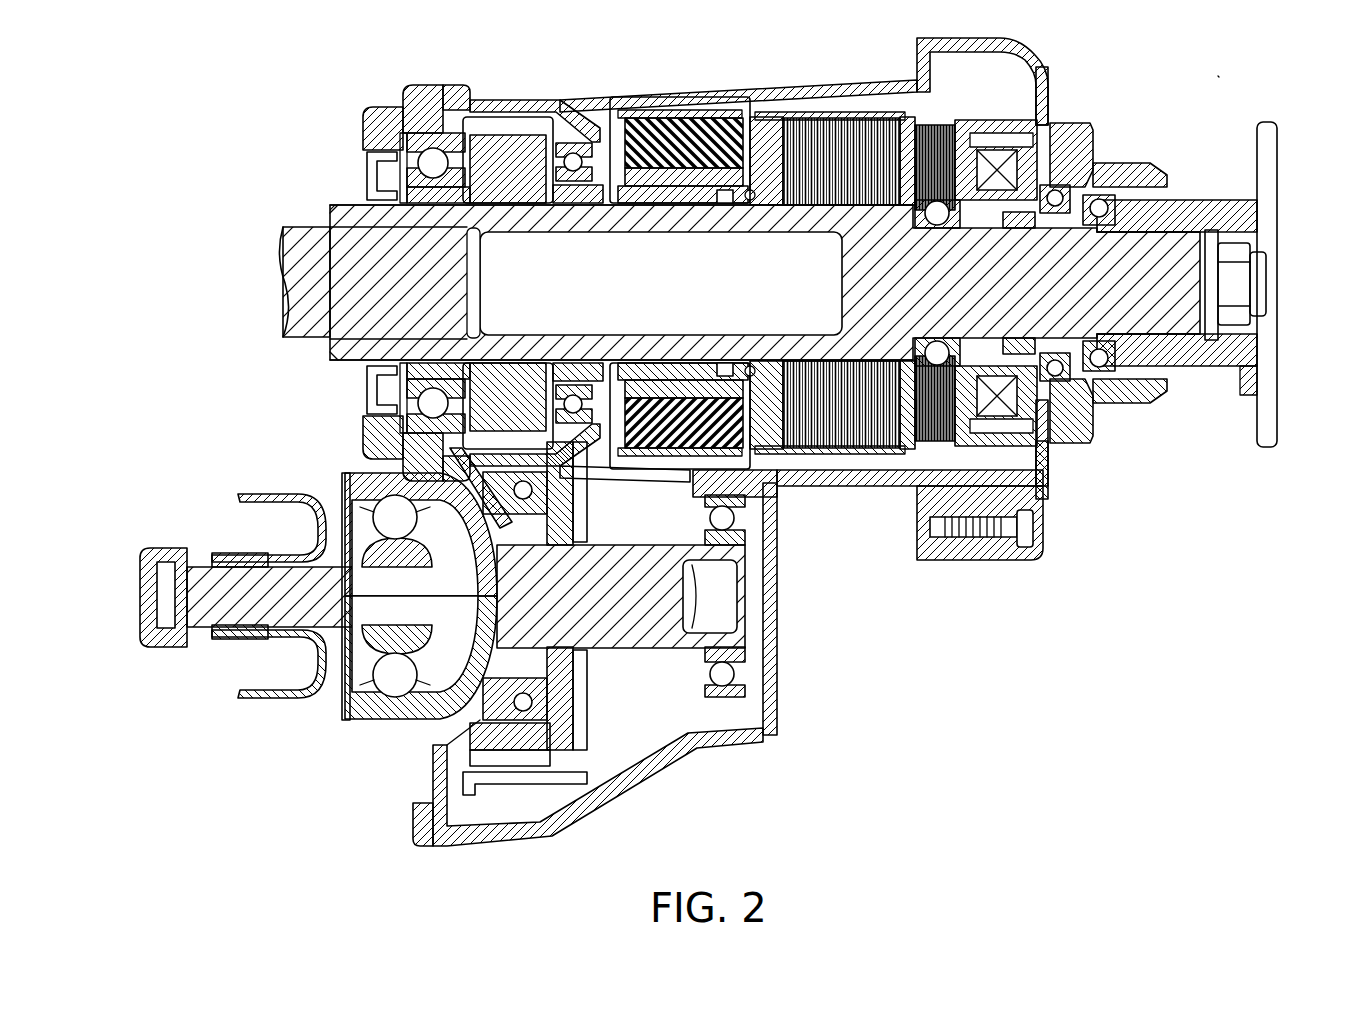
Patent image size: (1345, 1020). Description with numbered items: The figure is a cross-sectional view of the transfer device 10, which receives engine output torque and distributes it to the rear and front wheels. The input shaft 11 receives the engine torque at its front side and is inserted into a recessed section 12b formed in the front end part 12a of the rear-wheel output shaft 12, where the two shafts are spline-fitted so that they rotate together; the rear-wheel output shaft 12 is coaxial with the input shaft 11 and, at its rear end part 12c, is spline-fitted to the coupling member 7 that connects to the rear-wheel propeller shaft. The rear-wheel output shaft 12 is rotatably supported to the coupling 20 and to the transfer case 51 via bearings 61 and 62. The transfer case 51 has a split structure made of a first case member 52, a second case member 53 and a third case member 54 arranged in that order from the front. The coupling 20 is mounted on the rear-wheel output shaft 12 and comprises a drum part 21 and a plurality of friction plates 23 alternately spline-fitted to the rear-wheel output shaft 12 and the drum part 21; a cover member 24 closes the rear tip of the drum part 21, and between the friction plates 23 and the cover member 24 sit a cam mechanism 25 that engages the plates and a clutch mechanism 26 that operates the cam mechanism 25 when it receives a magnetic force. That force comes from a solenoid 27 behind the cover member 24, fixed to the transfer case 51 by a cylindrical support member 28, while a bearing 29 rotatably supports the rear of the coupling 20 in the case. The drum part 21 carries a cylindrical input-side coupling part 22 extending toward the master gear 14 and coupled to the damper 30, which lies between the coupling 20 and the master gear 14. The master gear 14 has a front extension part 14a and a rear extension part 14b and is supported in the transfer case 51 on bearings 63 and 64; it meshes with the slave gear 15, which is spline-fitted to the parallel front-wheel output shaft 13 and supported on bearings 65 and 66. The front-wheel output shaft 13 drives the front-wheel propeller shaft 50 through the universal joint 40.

The coupling member 7 is at (1278, 130).
The transfer device 10 is at (1218, 76).
The input shaft 11 is at (285, 270).
The rear-wheel output shaft 12 is at (707, 279).
The front end part 12a is at (330, 212).
The recessed section 12b is at (285, 232).
The rear end part 12c is at (1172, 296).
The front-wheel output shaft 13 is at (667, 593).
The master gear 14 is at (515, 117).
The front extension part 14a is at (421, 207).
The rear extension part 14b is at (571, 207).
The slave gear 15 is at (420, 790).
The coupling 20 is at (832, 243).
The drum part 21 is at (847, 112).
The input-side coupling part 22 is at (665, 210).
The friction plates 23 is at (880, 210).
The cover member 24 is at (1044, 283).
The cam mechanism 25 is at (940, 227).
The clutch mechanism 26 is at (945, 125).
The solenoid 27 is at (1010, 230).
The cylindrical support member 28 is at (1055, 123).
The bearing 29 is at (1095, 165).
The damper 30 is at (700, 107).
The universal joint 40 is at (304, 660).
The front-wheel propeller shaft 50 is at (140, 550).
The transfer case 51 is at (839, 280).
The first case member 52 is at (437, 85).
The second case member 53 is at (462, 85).
The third case member 54 is at (1045, 65).
The bearing 61 is at (755, 207).
The bearing 62 is at (1150, 177).
The bearing 63 is at (365, 118).
The bearing 64 is at (578, 143).
The bearing 65 is at (725, 692).
The bearing 66 is at (455, 715).